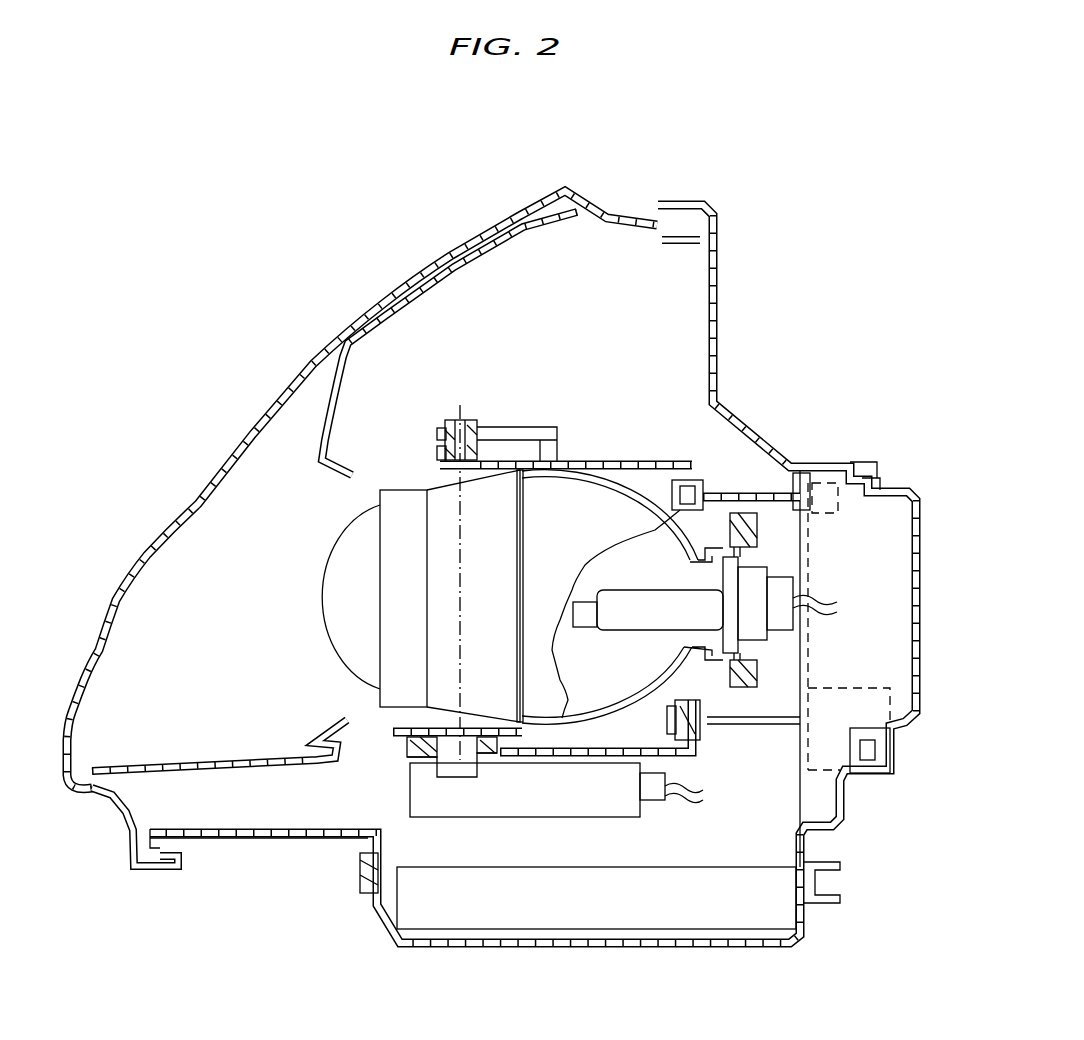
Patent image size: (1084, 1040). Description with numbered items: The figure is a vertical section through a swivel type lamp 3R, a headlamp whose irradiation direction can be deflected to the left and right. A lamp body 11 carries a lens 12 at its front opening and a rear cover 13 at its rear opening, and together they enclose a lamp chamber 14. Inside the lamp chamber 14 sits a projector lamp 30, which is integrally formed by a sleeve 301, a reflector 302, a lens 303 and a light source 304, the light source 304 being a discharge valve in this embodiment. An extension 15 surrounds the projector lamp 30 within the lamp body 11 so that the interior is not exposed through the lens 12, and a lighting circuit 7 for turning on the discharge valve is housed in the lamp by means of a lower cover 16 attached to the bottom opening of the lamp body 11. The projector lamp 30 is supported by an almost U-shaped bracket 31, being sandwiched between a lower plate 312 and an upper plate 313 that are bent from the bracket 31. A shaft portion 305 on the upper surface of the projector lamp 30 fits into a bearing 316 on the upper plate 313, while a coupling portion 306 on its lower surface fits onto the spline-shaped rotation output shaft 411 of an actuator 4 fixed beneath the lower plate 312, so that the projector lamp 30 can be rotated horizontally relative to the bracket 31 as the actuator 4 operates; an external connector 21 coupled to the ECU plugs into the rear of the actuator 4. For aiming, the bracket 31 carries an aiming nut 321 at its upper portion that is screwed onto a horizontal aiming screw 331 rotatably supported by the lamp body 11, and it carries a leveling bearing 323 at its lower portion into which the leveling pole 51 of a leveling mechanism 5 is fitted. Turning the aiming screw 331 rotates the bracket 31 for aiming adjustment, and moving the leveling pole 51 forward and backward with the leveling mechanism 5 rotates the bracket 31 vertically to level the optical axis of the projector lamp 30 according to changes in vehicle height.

The headlamp (right/left) 3R is at (658, 165).
The lamp body 11 is at (718, 322).
The lens 12 is at (370, 305).
The rear cover 13 is at (897, 490).
The lamp chamber 14 is at (218, 638).
The extension 15 is at (280, 780).
The lower cover 16 is at (548, 947).
The lighting circuit 7 is at (665, 920).
The leveling mechanism 5 is at (870, 766).
The projector lamp 30 is at (308, 565).
The sleeve 301 is at (515, 485).
The reflector 302 is at (633, 497).
The lens 303 is at (353, 640).
The light source 304 is at (628, 612).
The shaft portion 305 is at (448, 425).
The coupling portion 306 is at (400, 750).
The lower plate 312 is at (560, 757).
The upper plate 313 is at (512, 428).
The bearing 316 is at (466, 420).
The bracket 31 is at (690, 480).
The aiming nut 321 is at (710, 488).
The horizontal aiming screw 331 is at (790, 492).
The leveling bearing 323 is at (700, 745).
The leveling pole 51 is at (756, 726).
The actuator 4 is at (420, 800).
The rotation output shaft 411 is at (456, 765).
The external connector 21 is at (656, 790).